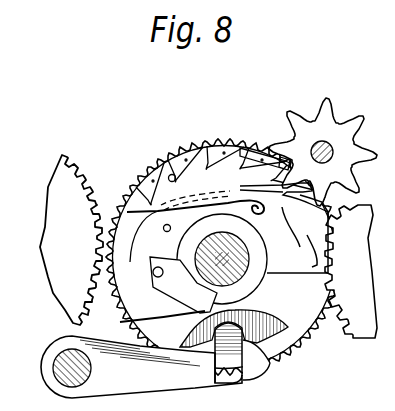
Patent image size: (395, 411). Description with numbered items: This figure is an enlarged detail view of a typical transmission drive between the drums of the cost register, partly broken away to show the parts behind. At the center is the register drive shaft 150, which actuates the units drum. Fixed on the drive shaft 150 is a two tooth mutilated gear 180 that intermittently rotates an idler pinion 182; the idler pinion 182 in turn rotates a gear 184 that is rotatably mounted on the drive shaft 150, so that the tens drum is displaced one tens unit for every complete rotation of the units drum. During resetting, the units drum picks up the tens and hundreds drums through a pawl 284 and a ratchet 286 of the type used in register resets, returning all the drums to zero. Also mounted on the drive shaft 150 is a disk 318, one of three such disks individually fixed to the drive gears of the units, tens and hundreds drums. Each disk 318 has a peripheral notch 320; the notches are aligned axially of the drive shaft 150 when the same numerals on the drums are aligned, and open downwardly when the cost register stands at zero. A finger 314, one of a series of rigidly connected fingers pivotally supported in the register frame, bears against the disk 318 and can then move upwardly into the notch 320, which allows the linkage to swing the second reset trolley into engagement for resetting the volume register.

The register drive shaft 150 is at (214, 258).
The two tooth mutilated gear 180 is at (308, 327).
The idler pinion 182 is at (328, 100).
The gear 184 is at (212, 165).
The pawl 284 is at (180, 293).
The ratchet 286 is at (256, 298).
The finger 314 is at (168, 377).
The disk 318 is at (286, 358).
The peripheral notch 320 is at (262, 362).